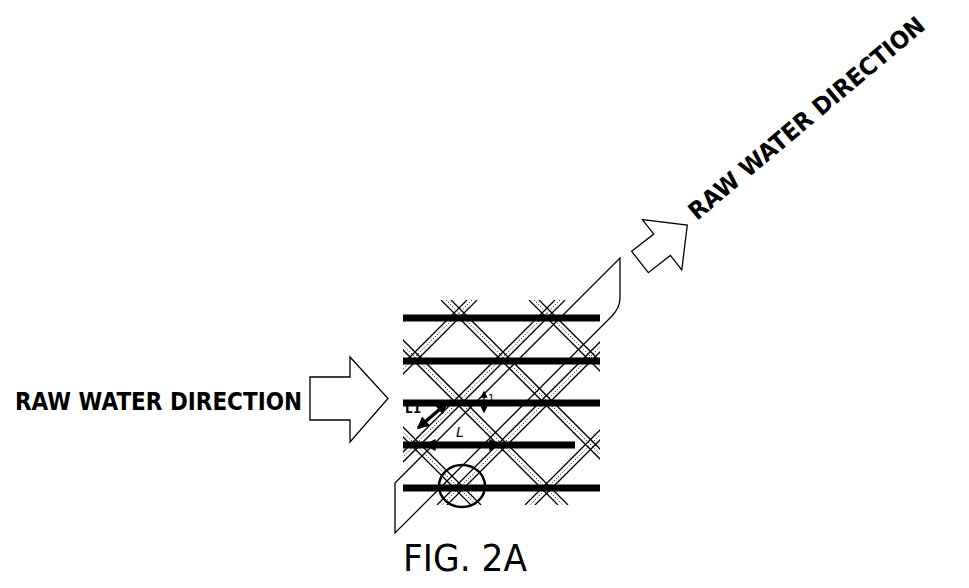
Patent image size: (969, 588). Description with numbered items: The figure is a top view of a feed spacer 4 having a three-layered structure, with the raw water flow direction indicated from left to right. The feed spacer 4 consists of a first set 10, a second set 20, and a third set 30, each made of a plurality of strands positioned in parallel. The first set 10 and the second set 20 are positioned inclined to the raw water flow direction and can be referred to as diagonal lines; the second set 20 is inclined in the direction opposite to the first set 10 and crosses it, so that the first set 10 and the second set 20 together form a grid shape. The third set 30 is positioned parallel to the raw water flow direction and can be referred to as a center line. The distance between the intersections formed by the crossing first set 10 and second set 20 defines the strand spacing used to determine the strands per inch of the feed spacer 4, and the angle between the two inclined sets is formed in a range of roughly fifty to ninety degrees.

The first set 10 is at (600, 349).
The second set 20 is at (599, 452).
The third set 30 is at (595, 401).
The feed spacer 4 is at (413, 513).